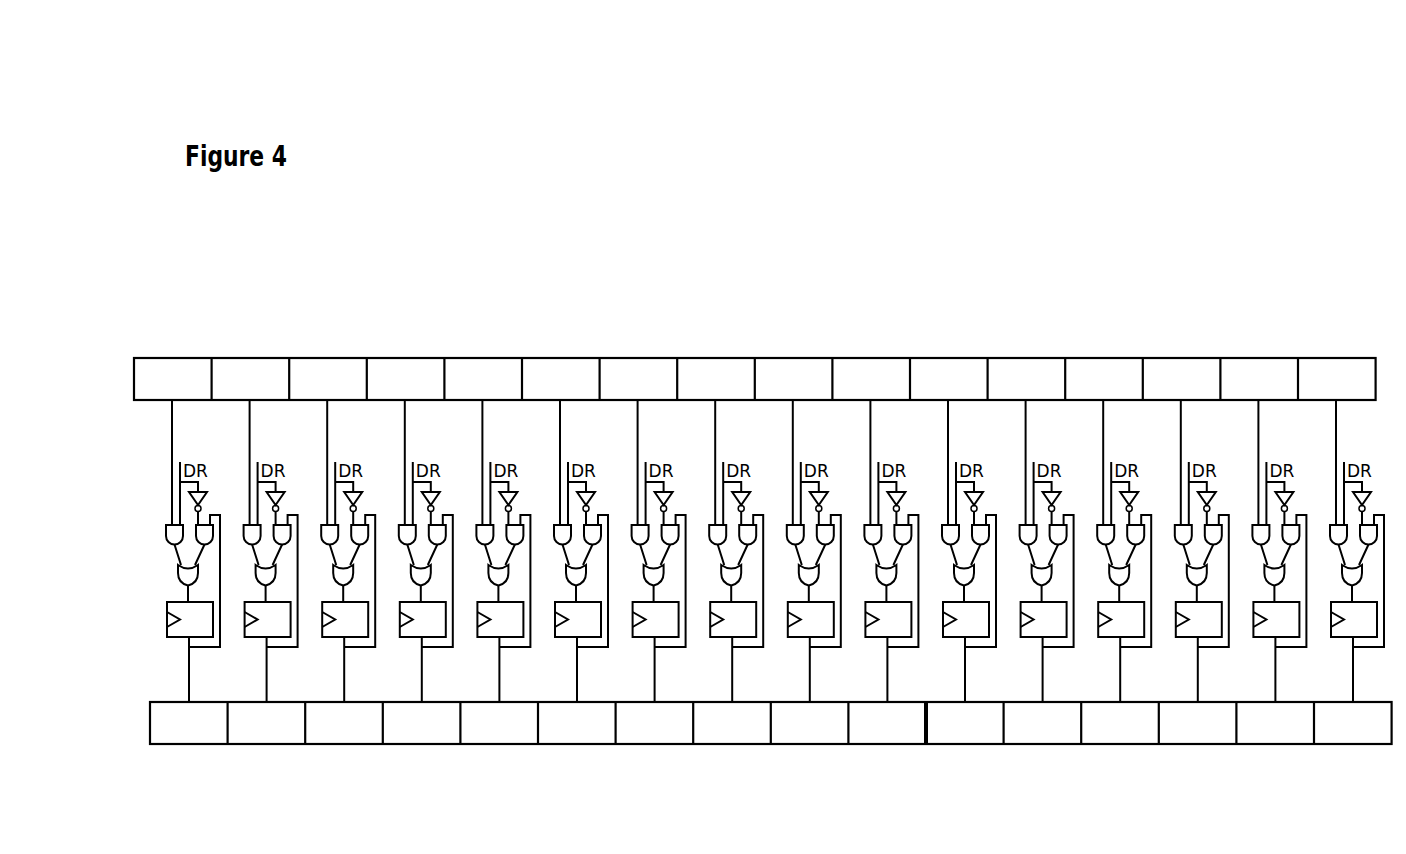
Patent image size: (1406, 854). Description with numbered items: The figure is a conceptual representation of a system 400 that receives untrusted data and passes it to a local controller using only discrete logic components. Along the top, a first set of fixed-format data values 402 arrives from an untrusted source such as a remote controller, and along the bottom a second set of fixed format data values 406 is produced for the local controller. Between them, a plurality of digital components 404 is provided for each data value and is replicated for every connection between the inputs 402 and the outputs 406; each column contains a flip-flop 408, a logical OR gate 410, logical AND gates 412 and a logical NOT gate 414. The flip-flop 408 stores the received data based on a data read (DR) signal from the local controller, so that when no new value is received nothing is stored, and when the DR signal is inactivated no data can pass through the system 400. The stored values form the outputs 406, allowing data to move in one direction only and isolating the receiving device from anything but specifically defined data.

The system 400 is at (284, 274).
The first set of fixed-format data values 402 is at (160, 357).
The plurality of digital components 404 is at (147, 494).
The second set of fixed format data values 406 is at (177, 744).
The flip-flop 408 is at (33, 612).
The logical OR gate 410 is at (44, 574).
The logical AND gate 412 is at (32, 530).
The logical NOT gate 414 is at (215, 480).